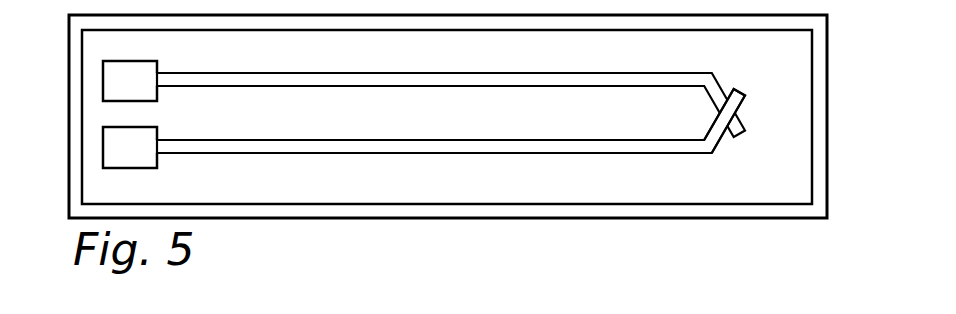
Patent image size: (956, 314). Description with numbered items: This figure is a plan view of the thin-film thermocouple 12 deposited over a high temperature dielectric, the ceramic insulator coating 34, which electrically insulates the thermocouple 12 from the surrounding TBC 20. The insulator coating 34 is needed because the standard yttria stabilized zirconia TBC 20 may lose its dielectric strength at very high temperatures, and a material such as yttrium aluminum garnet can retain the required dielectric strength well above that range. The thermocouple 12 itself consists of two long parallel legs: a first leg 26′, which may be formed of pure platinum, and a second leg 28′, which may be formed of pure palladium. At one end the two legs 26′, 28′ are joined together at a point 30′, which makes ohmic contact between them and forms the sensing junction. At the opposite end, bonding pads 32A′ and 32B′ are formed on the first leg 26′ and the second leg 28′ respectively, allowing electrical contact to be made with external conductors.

The thermocouple 12 is at (455, 104).
The TBC 20 is at (682, 205).
The first leg 26′ is at (553, 73).
The second leg 28′ is at (553, 140).
The point 30′ is at (742, 112).
The bonding pad 32A′ is at (156, 62).
The bonding pad 32B′ is at (156, 128).
The ceramic insulator coating 34 is at (558, 220).